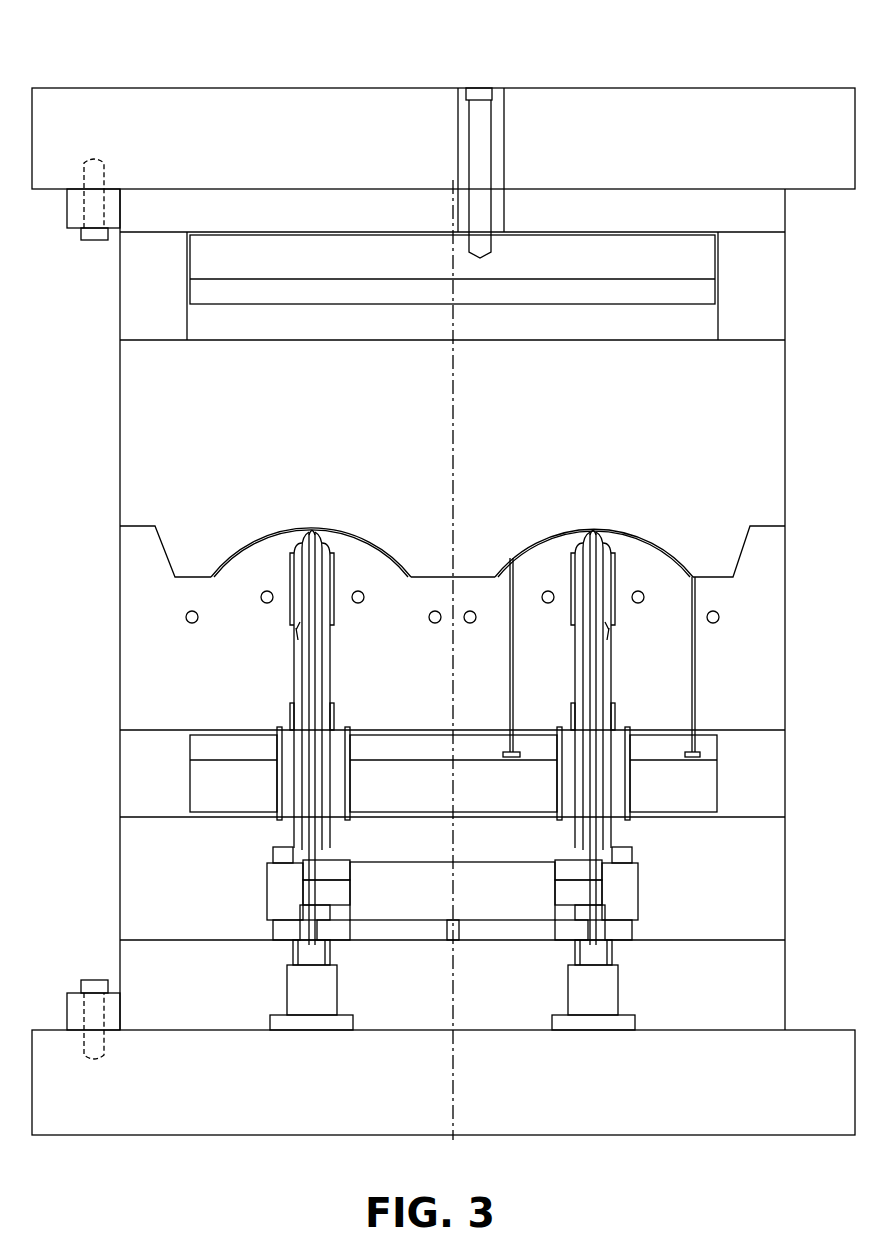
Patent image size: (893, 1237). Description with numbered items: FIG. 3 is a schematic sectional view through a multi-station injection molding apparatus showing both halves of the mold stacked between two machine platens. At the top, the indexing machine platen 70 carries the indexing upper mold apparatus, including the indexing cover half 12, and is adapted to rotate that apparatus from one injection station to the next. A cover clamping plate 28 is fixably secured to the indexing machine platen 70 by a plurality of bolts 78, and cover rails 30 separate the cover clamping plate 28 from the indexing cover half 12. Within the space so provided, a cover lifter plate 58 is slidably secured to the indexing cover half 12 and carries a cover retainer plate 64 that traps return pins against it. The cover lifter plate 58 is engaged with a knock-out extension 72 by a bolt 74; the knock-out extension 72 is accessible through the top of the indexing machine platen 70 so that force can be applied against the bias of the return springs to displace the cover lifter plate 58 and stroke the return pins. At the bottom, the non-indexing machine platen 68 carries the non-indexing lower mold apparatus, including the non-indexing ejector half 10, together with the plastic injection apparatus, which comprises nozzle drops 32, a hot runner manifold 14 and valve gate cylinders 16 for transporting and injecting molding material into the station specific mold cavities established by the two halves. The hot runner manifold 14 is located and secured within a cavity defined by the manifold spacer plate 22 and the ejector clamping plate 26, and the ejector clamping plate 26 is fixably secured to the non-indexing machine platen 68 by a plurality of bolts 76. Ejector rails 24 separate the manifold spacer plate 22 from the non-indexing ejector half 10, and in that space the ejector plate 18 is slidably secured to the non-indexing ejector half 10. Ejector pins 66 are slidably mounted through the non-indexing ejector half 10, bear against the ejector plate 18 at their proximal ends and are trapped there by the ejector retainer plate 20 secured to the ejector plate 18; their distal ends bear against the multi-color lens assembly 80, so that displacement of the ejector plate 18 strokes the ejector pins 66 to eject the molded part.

The non-indexing ejector half 10 is at (775, 628).
The indexing cover half 12 is at (752, 423).
The hot runner manifold 14 is at (615, 887).
The valve gate cylinders 16 is at (293, 985).
The ejector plate 18 is at (697, 778).
The ejector retainer plate 20 is at (693, 752).
The manifold spacer plate 22 is at (752, 850).
The ejector rails 24 is at (142, 775).
The ejector clamping plate 26 is at (743, 960).
The cover clamping plate 28 is at (758, 205).
The cover rails 30 is at (765, 285).
The nozzle drops 32 is at (300, 668).
The cover lifter plate 58 is at (200, 262).
The cover retainer plate 64 is at (606, 292).
The ejector pins 66 is at (692, 600).
The non-indexing machine platen 68 is at (50, 1030).
The indexing machine platen 70 is at (632, 100).
The knock-out extension 72 is at (462, 88).
The bolt 74 is at (490, 95).
The bolts 76 is at (94, 985).
The bolts 78 is at (92, 238).
The multi-color lens assembly 80 is at (362, 535).